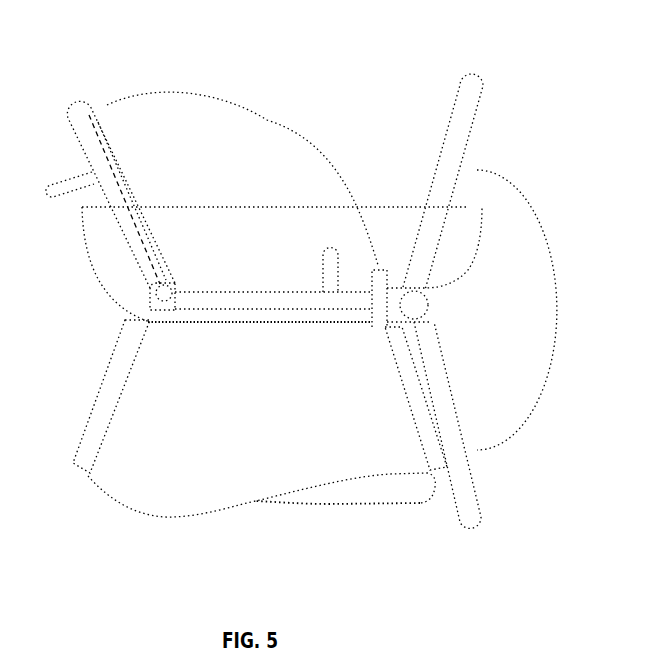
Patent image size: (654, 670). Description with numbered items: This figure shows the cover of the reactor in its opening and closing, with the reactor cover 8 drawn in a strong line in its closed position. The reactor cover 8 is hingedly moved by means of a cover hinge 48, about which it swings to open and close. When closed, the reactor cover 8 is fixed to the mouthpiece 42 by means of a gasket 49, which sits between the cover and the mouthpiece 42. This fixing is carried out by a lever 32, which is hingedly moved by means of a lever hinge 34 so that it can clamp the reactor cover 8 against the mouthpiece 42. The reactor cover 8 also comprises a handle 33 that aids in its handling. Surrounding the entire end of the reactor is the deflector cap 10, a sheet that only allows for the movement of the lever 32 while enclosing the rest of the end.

The reactor cover 8 is at (77, 103).
The deflector cap 10 is at (83, 272).
The lever 32 is at (470, 533).
The handle 33 is at (360, 134).
The lever hinge 34 is at (410, 308).
The mouthpiece 42 is at (287, 311).
The cover hinge 48 is at (165, 292).
The gasket 49 is at (108, 122).